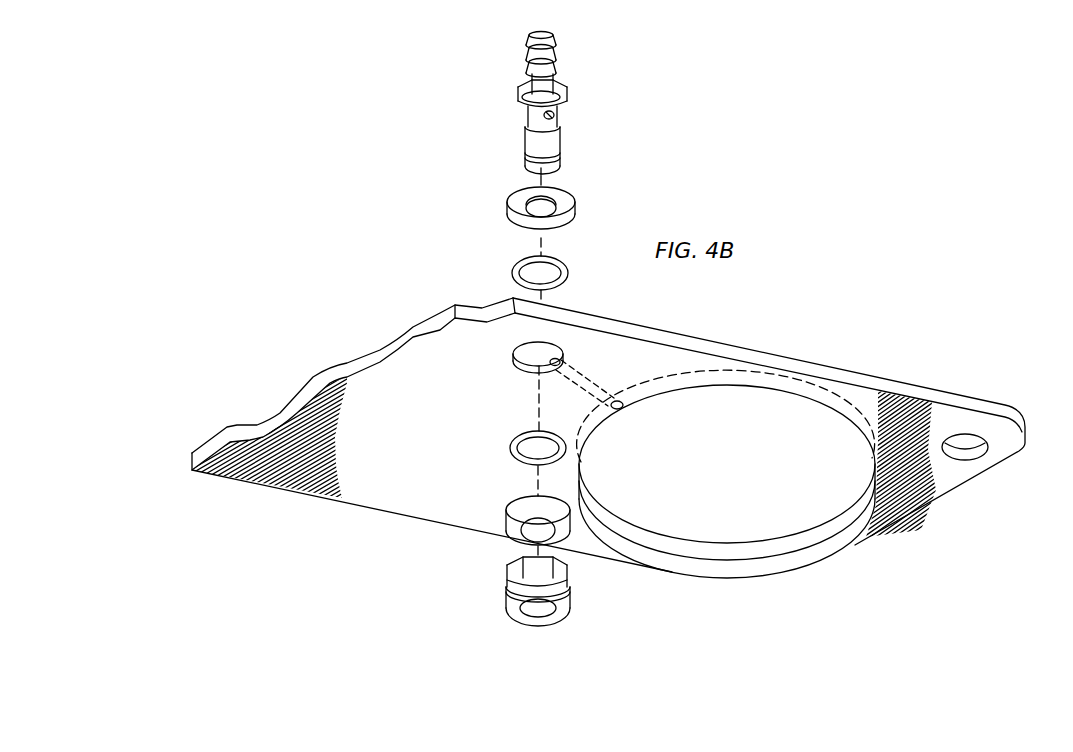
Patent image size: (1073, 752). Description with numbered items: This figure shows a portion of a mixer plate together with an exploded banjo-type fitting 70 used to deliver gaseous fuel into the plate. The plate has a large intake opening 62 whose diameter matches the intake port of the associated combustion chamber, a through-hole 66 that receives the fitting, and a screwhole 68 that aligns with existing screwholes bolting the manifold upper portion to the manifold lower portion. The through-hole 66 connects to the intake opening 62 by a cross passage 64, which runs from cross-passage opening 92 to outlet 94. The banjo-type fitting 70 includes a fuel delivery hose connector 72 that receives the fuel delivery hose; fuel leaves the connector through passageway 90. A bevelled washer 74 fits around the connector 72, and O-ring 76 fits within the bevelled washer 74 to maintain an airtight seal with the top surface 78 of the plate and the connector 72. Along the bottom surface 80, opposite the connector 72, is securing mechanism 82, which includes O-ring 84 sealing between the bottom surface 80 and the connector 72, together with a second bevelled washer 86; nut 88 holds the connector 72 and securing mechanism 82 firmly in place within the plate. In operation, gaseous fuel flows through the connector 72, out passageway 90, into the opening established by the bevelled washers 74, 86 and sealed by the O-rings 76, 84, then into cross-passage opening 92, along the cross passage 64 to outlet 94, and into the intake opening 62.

The intake opening 62 is at (741, 483).
The cross passage 64 is at (590, 375).
The through-hole 66 is at (526, 366).
The screwhole 68 is at (963, 457).
The banjo-type fitting 70 is at (606, 161).
The fuel delivery hose connector 72 is at (555, 38).
The bevelled washer 74 is at (573, 203).
The O-ring 76 is at (568, 276).
The top surface 78 is at (393, 343).
The bottom surface 80 is at (393, 363).
The securing mechanism 82 is at (440, 514).
The O-ring 84 is at (511, 448).
The bevelled washer 86 is at (568, 519).
The nut 88 is at (564, 608).
The passageway 90 is at (557, 118).
The cross-passage opening 92 is at (546, 366).
The outlet 94 is at (623, 408).